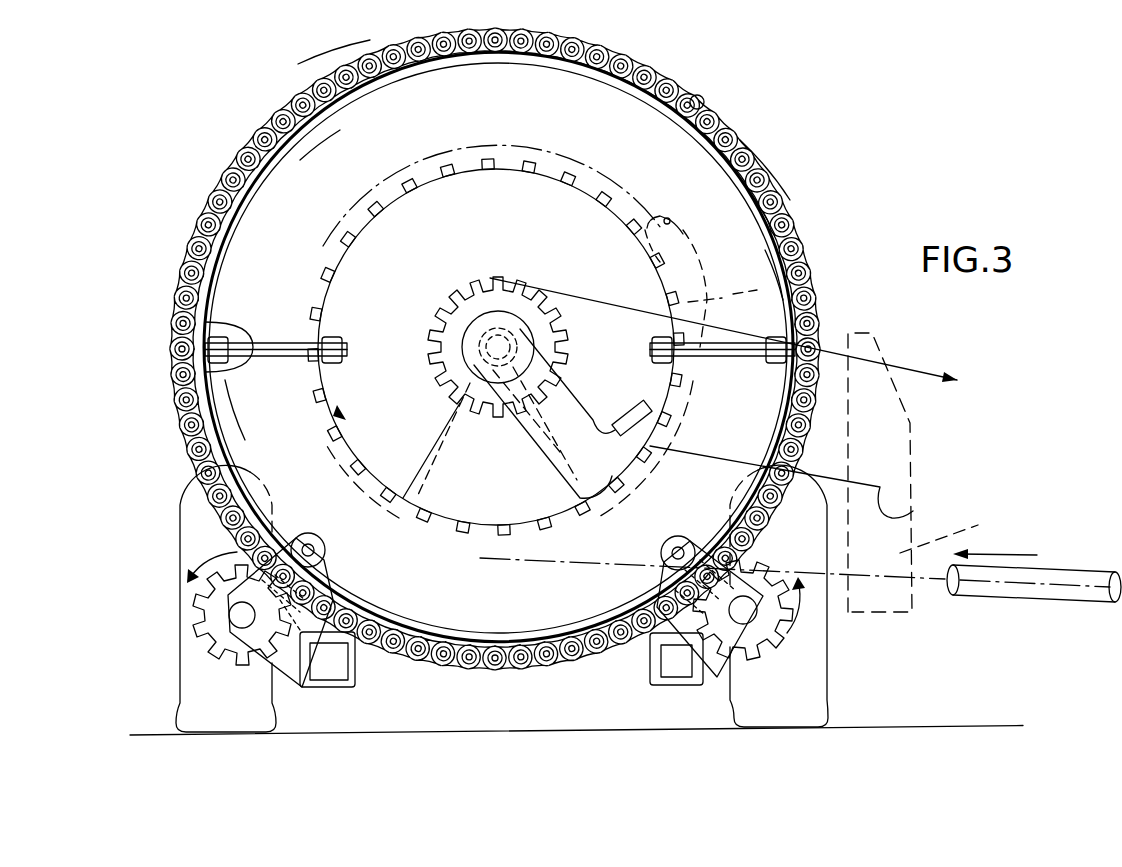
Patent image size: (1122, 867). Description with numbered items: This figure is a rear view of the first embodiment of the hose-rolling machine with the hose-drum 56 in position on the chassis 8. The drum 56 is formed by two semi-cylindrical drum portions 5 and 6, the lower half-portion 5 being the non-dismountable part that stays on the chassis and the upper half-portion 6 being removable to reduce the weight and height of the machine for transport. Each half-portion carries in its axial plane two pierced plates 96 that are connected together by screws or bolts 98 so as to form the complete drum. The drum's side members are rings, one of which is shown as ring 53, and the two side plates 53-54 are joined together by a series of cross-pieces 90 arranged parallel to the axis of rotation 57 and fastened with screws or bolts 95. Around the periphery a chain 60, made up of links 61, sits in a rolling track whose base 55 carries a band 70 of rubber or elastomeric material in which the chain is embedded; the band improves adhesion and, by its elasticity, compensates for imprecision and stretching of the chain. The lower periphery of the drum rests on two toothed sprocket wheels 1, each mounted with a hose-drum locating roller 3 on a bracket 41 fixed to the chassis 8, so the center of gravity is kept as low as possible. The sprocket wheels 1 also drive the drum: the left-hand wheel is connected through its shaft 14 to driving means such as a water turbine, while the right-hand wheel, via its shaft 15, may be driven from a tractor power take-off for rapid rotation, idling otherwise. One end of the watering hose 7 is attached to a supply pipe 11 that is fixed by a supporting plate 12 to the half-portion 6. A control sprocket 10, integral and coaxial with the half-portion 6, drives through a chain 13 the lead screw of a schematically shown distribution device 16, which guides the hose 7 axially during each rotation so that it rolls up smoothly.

The toothed sprocket wheel 1 is at (195, 618).
The hose-drum locating roller 3 is at (327, 548).
The semi-cylindrical drum portion 5 is at (248, 261).
The semi-cylindrical drum portion 6 is at (242, 407).
The watering hose 7 is at (1070, 578).
The chassis 8 is at (333, 668).
The control sprocket 10 is at (470, 312).
The pipe 11 is at (553, 463).
The supporting plate 12 is at (428, 442).
The chain 13 is at (910, 370).
The shaft 14 is at (240, 613).
The shaft 15 is at (773, 627).
The distribution device 16 is at (953, 532).
The bracket 41 is at (287, 655).
The ring 53 is at (320, 157).
The side plates 53-54 is at (777, 260).
The base of the rolling track 55 is at (327, 95).
The hose-drum 56 is at (662, 60).
The axis of rotation 57 is at (495, 346).
The chain 60 is at (770, 160).
The chain link 61 is at (697, 102).
The band 70 is at (766, 206).
The cross-piece 90 is at (647, 218).
The screw or bolt 95 is at (333, 252).
The plate 96 is at (210, 327).
The screw or bolt 98 is at (220, 362).